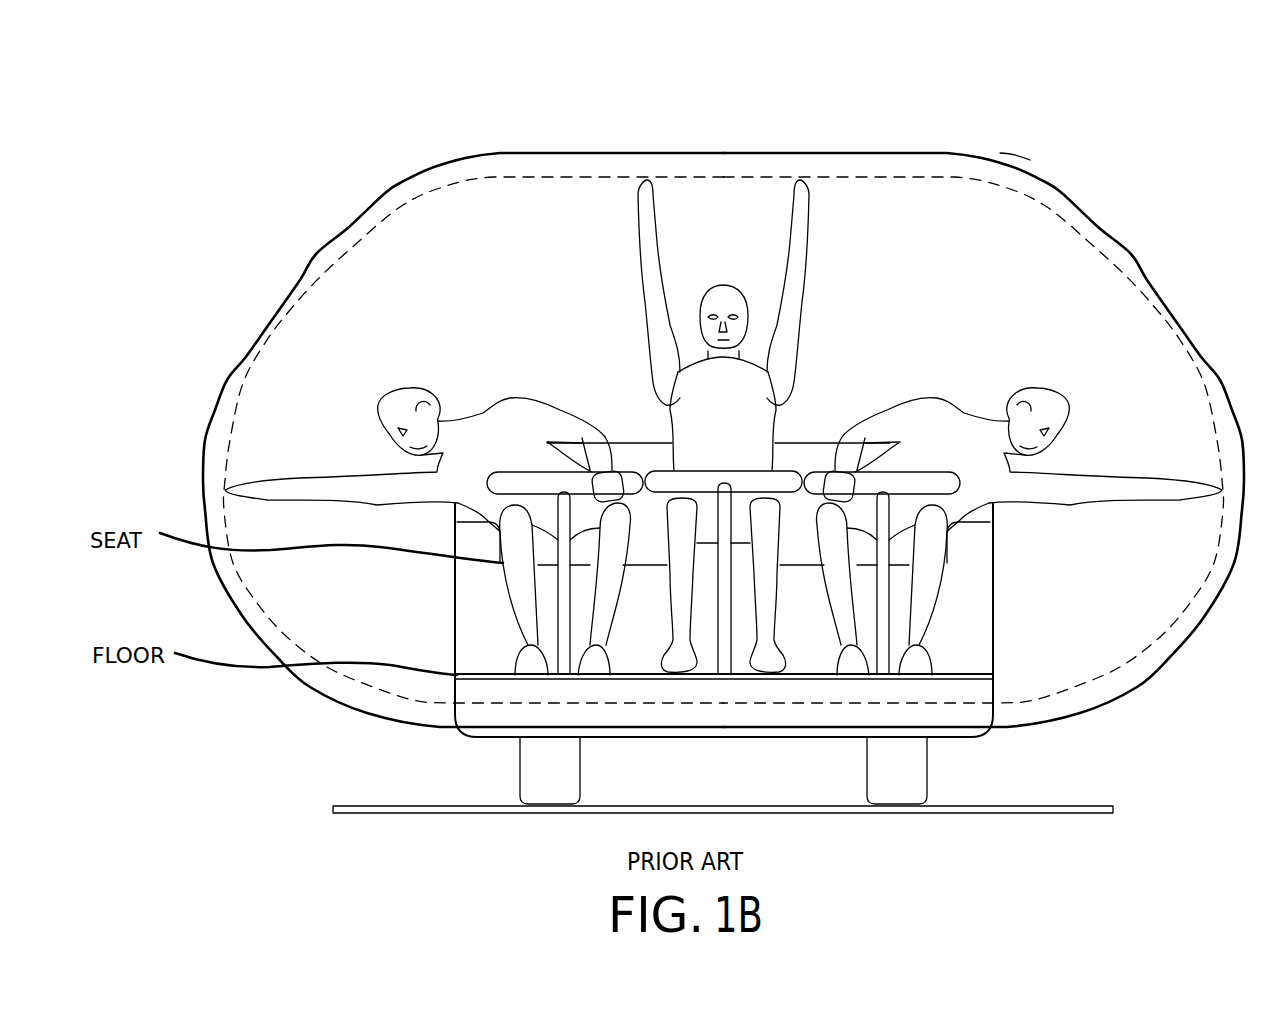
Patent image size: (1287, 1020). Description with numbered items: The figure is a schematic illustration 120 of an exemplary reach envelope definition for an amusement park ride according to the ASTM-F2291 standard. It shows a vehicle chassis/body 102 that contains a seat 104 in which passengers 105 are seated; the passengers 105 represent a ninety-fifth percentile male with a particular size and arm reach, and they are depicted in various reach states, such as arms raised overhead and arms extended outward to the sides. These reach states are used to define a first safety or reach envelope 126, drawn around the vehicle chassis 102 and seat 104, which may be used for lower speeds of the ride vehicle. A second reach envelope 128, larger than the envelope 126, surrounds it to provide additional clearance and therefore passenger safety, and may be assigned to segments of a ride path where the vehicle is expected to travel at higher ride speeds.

The schematic illustration 120 is at (905, 141).
The second reach envelope 128 is at (1022, 170).
The first safety or reach envelope 126 is at (1128, 268).
The passengers 105 is at (943, 388).
The seat 104 is at (994, 579).
The vehicle chassis/body 102 is at (962, 739).